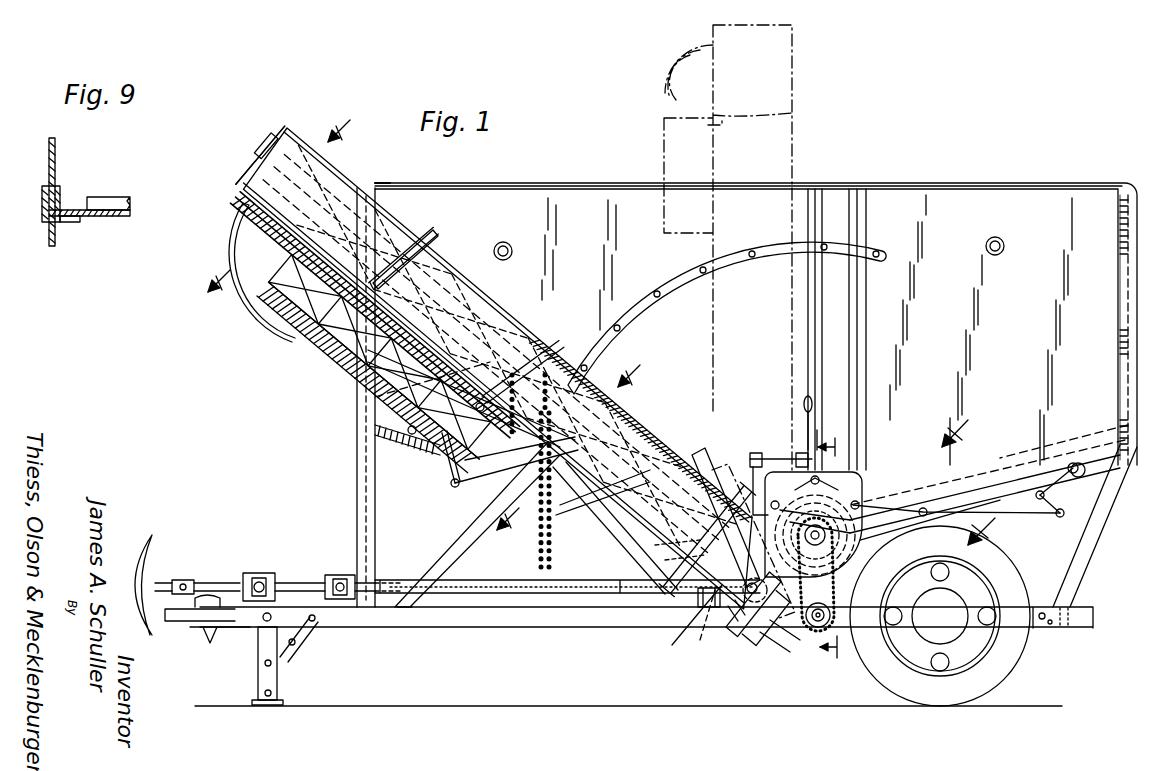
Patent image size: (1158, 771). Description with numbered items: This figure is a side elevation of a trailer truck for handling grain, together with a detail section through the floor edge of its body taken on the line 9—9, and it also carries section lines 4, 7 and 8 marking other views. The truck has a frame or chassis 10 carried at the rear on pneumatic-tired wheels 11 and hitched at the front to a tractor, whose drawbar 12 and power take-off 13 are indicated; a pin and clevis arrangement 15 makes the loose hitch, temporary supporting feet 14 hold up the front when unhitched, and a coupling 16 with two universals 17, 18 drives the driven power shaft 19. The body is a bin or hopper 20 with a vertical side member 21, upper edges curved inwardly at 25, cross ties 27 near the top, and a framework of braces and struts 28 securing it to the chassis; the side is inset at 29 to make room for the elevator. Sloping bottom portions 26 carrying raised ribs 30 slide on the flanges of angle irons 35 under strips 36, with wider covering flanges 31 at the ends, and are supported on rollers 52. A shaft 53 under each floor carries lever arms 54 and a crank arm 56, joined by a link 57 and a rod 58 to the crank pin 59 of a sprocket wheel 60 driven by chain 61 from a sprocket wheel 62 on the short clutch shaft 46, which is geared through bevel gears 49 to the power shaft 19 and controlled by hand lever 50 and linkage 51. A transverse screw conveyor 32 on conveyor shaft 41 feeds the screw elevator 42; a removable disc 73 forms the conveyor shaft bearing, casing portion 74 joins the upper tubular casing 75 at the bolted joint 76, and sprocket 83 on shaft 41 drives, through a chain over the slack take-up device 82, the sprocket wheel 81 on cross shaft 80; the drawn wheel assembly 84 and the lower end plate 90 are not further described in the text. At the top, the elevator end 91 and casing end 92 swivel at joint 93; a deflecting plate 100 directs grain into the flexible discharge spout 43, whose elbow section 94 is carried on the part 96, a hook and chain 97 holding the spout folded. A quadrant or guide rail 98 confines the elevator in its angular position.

In FIG. 1, the section line 4- 4 is at (795, 550).
In FIG. 1, the section line 7- 7 is at (281, 204).
In FIG. 1, the section line 8- 8 is at (569, 445).
In FIG. 1, the section line 9- 9 is at (968, 487).
In FIG. 1, the frame or chassis 10 is at (540, 627).
In FIG. 1, the pneumatic-tired wheels 11 is at (1020, 652).
In FIG. 1, the drawbar 12 is at (185, 627).
In FIG. 1, the power take-off 13 is at (168, 578).
In FIG. 1, the temporary supporting feet 14 is at (262, 655).
In FIG. 1, the pin and clevis arrangement 15 is at (218, 635).
In FIG. 1, the coupling 16 is at (196, 580).
In FIG. 1, the universal 17 is at (266, 573).
In FIG. 1, the universal 18 is at (338, 575).
In FIG. 1, the driven power shaft 19 is at (512, 586).
In FIG. 1, the bin, hopper or container 20 is at (944, 186).
In FIG. 9, the vertical side member 21 is at (56, 162).
In FIG. 1, the vertical side member 21 is at (1070, 276).
In FIG. 1, the inwardly curved upper edge 25 is at (378, 184).
In FIG. 9, the sloping bottom portions 26 is at (100, 218).
In FIG. 1, the sloping bottom portions 26 is at (396, 438).
In FIG. 1, the cross ties 27 is at (512, 249).
In FIG. 1, the framework of braces, struts 28 is at (430, 532).
In FIG. 1, the inset 29 is at (828, 190).
In FIG. 9, the raised ribs 30 is at (110, 198).
In FIG. 1, the raised ribs 30 is at (478, 412).
In FIG. 1, the covering flanges 31 is at (404, 380).
In FIG. 1, the screw conveyor 32 is at (862, 476).
In FIG. 9, the angle or T-irons 35 is at (70, 224).
In FIG. 9, the strips or angles 36 is at (62, 198).
In FIG. 1, the conveyor shaft 41 is at (868, 506).
In FIG. 1, the screw elevator 42 is at (795, 143).
In FIG. 1, the flexible discharge spout 43 is at (665, 133).
In FIG. 1, the short shaft 46 is at (735, 622).
In FIG. 1, the bevel gears 49 is at (699, 625).
In FIG. 1, the hand lever 50 is at (804, 412).
In FIG. 1, the linkage 51 is at (813, 524).
In FIG. 1, the rollers 52 is at (715, 490).
In FIG. 1, the shaft 53 is at (449, 482).
In FIG. 1, the lever arms 54 is at (750, 467).
In FIG. 1, the crank or lever arm 56 is at (452, 486).
In FIG. 1, the link or bar 57 is at (600, 518).
In FIG. 1, the rod or link 58 is at (990, 520).
In FIG. 1, the crank pin 59 is at (676, 558).
In FIG. 1, the sprocket wheel 60 is at (670, 546).
In FIG. 1, the chain 61 is at (700, 600).
In FIG. 1, the sprocket wheel 62 is at (764, 595).
In FIG. 1, the removable disc 73 is at (478, 342).
In FIG. 1, the elevator casing portion 74 is at (687, 620).
In FIG. 1, the upper tubular casing part 75 is at (668, 448).
In FIG. 1, the bolted joint 76 is at (702, 572).
In FIG. 1, the cross shaft 80 is at (832, 610).
In FIG. 1, the sprocket wheel 81 is at (790, 636).
In FIG. 1, the adjustable slack take-up device 82 is at (850, 575).
In FIG. 1, the sprocket 83 is at (858, 545).
In FIG. 1, the wheel 84 is at (940, 616).
In FIG. 1, the plate 90 is at (750, 640).
In FIG. 1, the elevator end 91 is at (278, 145).
In FIG. 1, the upper end of elevator casing 92 is at (347, 171).
In FIG. 1, the swivel joint 93 is at (437, 230).
In FIG. 1, the upper spout section 94 is at (238, 248).
In FIG. 1, the spout attachment part 96 is at (250, 207).
In FIG. 1, the hook and chain 97 is at (528, 392).
In FIG. 1, the quadrant or guide rail 98 is at (628, 302).
In FIG. 1, the deflecting plate 100 is at (335, 134).